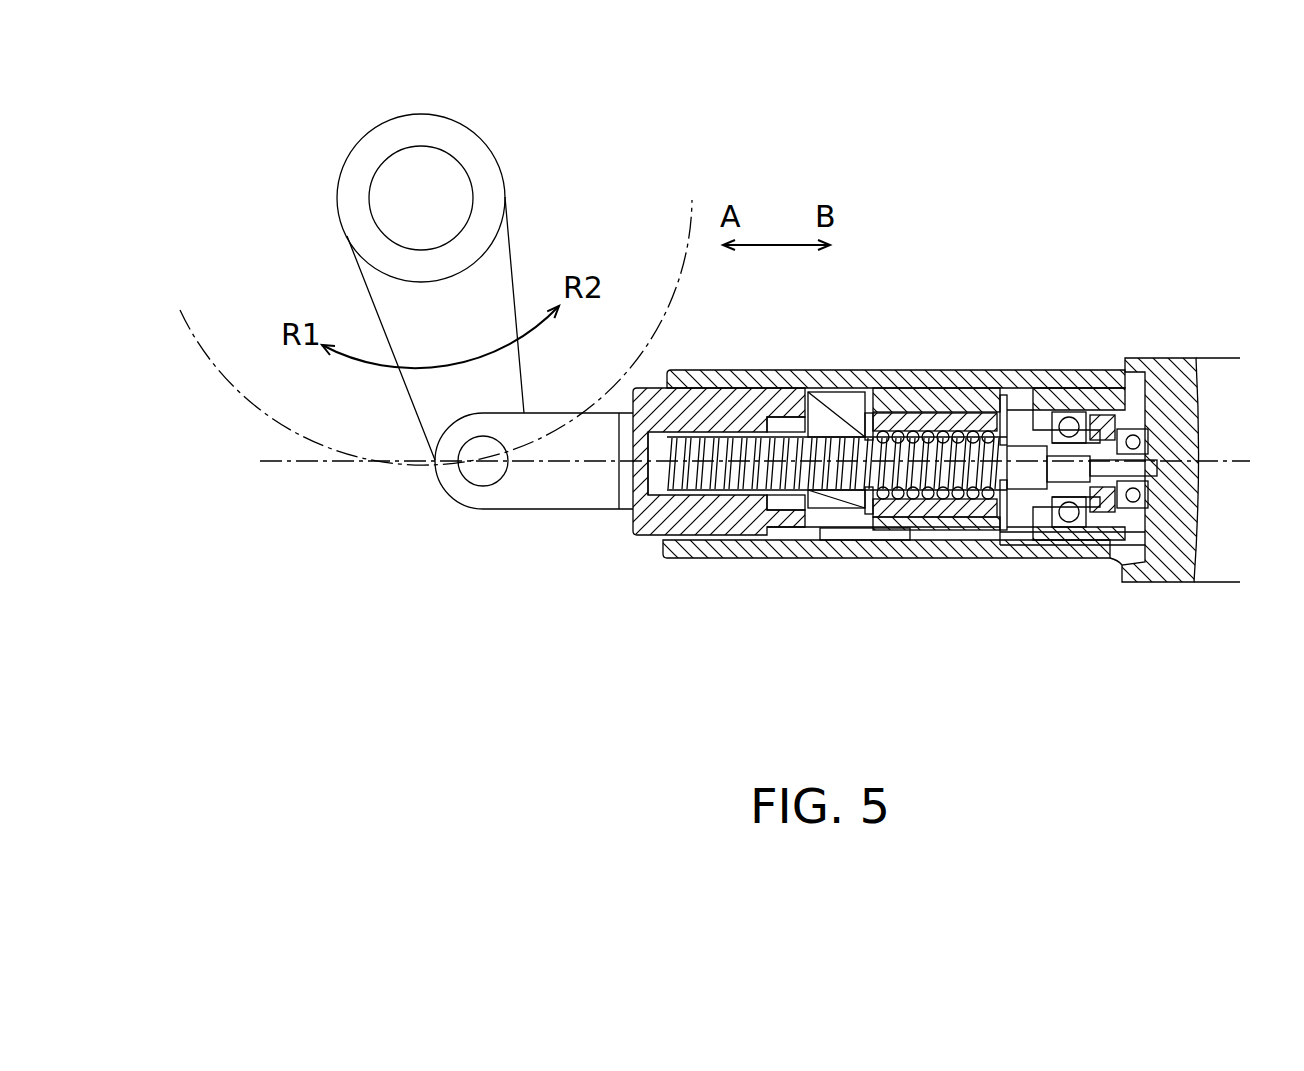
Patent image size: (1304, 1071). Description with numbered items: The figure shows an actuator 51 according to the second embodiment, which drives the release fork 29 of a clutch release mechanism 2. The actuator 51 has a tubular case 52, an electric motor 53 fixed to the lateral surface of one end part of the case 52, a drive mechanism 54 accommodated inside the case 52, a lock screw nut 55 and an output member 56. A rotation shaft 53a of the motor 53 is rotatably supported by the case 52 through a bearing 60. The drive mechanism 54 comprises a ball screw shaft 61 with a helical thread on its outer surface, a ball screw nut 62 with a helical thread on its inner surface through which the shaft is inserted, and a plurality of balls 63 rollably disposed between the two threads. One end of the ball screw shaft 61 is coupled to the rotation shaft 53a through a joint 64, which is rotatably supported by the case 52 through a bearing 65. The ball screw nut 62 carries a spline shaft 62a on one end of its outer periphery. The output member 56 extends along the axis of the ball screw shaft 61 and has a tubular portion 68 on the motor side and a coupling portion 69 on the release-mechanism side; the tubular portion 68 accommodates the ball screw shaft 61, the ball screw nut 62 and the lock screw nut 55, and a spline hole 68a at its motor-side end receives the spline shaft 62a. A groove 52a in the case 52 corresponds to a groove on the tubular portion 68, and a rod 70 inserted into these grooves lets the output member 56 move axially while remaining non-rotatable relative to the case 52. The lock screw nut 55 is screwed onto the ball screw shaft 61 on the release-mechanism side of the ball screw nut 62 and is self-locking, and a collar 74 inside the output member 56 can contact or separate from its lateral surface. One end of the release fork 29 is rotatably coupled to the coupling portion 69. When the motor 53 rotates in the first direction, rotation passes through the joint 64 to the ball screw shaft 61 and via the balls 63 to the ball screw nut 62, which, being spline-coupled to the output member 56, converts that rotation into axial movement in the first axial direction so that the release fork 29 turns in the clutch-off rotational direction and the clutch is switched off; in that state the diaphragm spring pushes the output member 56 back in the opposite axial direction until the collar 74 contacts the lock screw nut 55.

The release mechanism 2 is at (538, 271).
The release fork 29 is at (382, 296).
The actuator 51 is at (895, 237).
The tubular case 52 is at (700, 388).
The groove 52a is at (1085, 550).
The electric motor 53 is at (1182, 360).
The rotation shaft 53a is at (1192, 540).
The drive mechanism 54 is at (942, 390).
The lock screw nut 55 is at (835, 392).
The output member 56 is at (648, 375).
The bearing 60 is at (1140, 429).
The ball screw shaft 61 is at (1022, 446).
The ball screw nut 62 is at (935, 388).
The spline shaft 62a is at (985, 413).
The balls 63 is at (871, 413).
The joint 64 is at (1027, 527).
The bearing 65 is at (1076, 412).
The tubular portion 68 is at (638, 537).
The spline hole 68a is at (908, 540).
The coupling portion 69 is at (553, 485).
The rod 70 is at (967, 542).
The collar 74 is at (792, 417).